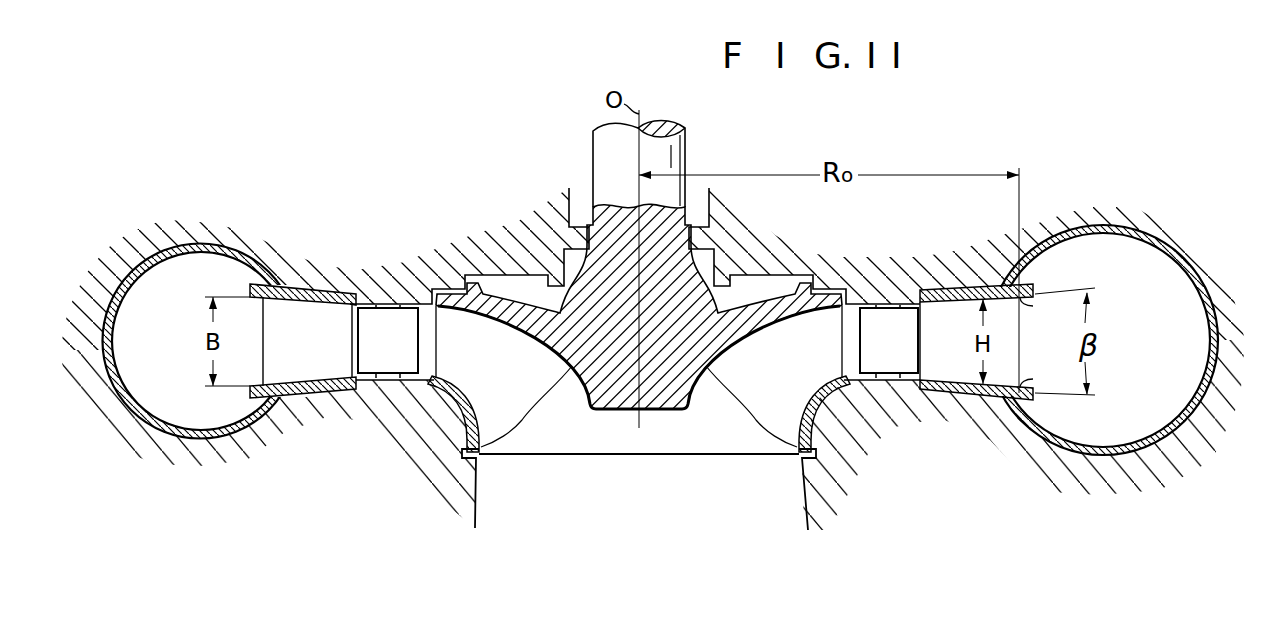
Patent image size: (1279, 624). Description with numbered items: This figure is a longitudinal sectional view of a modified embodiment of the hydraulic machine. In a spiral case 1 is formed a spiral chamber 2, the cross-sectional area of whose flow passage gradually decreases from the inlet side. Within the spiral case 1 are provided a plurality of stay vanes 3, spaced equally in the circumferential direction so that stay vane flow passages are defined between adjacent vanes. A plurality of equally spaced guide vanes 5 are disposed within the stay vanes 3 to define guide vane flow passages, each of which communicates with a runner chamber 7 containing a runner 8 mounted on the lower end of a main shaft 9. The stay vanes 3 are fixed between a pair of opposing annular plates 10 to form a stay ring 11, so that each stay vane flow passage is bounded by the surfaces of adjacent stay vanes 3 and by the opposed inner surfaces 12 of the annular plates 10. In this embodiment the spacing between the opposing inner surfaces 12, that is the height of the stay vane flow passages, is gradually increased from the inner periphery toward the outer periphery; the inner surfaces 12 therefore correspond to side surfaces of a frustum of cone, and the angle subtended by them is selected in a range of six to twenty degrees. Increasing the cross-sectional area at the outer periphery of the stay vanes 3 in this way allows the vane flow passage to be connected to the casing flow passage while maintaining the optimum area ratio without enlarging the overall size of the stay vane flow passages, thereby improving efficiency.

The spiral case 1 is at (193, 243).
The spiral chamber 2 is at (1155, 351).
The stay vanes 3 is at (940, 308).
The guide vanes 5 is at (868, 342).
The runner chamber 7 is at (833, 410).
The runner 8 is at (730, 334).
The main shaft 9 is at (600, 144).
The annular plates 10 is at (985, 290).
The stay ring 11 is at (955, 395).
The inner surfaces 12 is at (1020, 300).